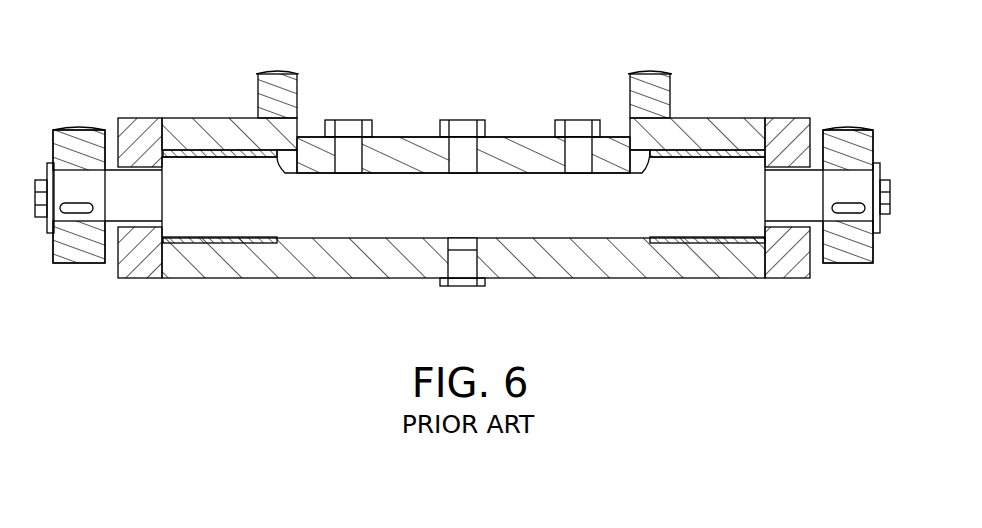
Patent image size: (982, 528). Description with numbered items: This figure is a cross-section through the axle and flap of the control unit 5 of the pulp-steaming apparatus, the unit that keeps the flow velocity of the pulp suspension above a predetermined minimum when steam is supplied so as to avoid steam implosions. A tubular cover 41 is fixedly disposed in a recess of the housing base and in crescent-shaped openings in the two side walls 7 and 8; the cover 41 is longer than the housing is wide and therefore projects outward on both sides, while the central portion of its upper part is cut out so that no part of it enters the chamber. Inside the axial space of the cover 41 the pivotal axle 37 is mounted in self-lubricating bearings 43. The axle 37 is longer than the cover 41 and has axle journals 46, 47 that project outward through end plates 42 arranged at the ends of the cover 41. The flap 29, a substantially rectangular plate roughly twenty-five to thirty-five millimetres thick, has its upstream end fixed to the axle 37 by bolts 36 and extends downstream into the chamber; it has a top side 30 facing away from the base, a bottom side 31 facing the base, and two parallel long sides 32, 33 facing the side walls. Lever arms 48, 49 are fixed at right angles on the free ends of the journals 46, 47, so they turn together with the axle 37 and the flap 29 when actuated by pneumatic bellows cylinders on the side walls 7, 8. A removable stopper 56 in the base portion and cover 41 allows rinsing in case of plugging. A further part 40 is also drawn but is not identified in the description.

The control unit 5 is at (75, 80).
The side wall 7 is at (645, 100).
The side wall 8 is at (272, 95).
The flap 29 is at (404, 150).
The top side 30 is at (510, 140).
The bottom side 31 is at (520, 173).
The long side 32 is at (635, 160).
The long side 33 is at (292, 160).
The bolts 36 is at (344, 120).
The pivotal axle 37 is at (657, 202).
The left bore region 40 is at (237, 217).
The tubular cover 41 is at (363, 253).
The end plates 42 is at (135, 122).
The self-lubricating bearings 43 is at (196, 150).
The axle journal 46 is at (797, 213).
The axle journal 47 is at (132, 213).
The lever arm 48 is at (848, 142).
The lever arm 49 is at (72, 237).
The removable stopper 56 is at (463, 263).